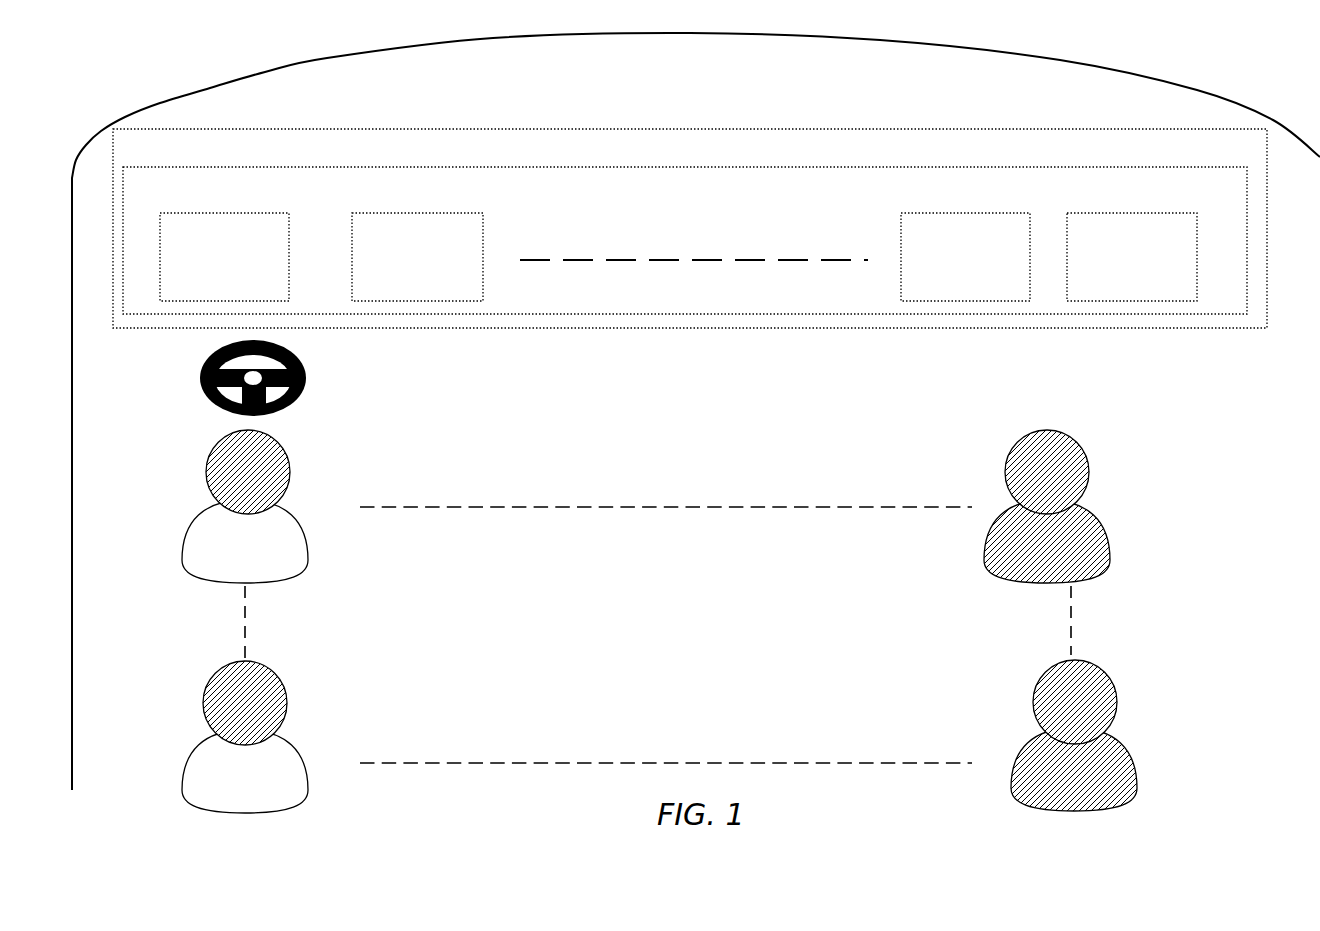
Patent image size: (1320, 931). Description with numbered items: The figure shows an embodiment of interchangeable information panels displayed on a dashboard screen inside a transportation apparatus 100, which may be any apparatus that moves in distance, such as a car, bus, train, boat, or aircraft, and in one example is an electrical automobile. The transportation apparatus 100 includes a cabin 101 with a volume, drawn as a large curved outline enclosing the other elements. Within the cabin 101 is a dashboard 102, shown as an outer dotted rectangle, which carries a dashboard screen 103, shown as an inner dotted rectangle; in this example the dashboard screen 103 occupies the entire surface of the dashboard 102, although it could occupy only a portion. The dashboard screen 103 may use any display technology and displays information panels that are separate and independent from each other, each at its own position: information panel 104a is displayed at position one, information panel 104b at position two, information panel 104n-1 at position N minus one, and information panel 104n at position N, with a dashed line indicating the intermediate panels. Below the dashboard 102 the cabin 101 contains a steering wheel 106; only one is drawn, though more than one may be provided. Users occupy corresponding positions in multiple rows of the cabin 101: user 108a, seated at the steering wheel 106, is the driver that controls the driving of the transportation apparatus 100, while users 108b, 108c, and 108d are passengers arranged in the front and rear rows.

The transportation apparatus 100 is at (1197, 90).
The cabin 101 is at (702, 77).
The dashboard 102 is at (775, 130).
The dashboard screen 103 is at (757, 168).
The information panel 104a is at (220, 215).
The information panel 104b is at (412, 215).
The information panel 104n-1 is at (958, 215).
The information panel 104n is at (1137, 215).
The steering wheel 106 is at (310, 383).
The user 108a is at (283, 457).
The user 108b is at (1070, 445).
The user 108c is at (282, 687).
The user 108d is at (1111, 683).